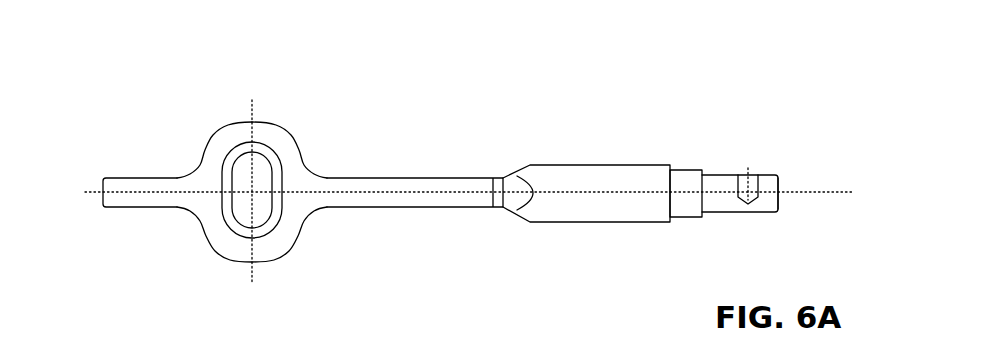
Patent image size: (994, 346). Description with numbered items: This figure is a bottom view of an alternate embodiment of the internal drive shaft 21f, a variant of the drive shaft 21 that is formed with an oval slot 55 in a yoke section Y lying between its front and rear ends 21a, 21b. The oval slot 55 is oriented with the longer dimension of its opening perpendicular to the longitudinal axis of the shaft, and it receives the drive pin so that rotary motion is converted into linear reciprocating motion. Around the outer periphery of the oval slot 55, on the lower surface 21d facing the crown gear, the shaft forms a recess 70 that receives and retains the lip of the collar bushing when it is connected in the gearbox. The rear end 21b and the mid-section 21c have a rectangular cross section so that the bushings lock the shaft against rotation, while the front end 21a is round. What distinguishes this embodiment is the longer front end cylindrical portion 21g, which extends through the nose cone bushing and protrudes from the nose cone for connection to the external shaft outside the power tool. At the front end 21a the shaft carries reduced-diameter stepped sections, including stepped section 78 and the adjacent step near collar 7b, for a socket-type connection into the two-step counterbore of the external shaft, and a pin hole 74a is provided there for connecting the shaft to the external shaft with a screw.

The drive shaft 21 is at (470, 203).
The front end 21a is at (775, 213).
The rear end 21b is at (132, 203).
The mid-section 21c is at (418, 207).
The lower surface 21d is at (302, 206).
The alternate drive shaft 21f is at (292, 138).
The front end cylindrical portion 21g is at (580, 163).
The oval slot 55 is at (241, 222).
The recess 70 is at (272, 227).
The pin hole 74a is at (750, 175).
The collar 7b is at (688, 203).
The stepped section 78 is at (725, 212).
The yoke section Y is at (230, 132).